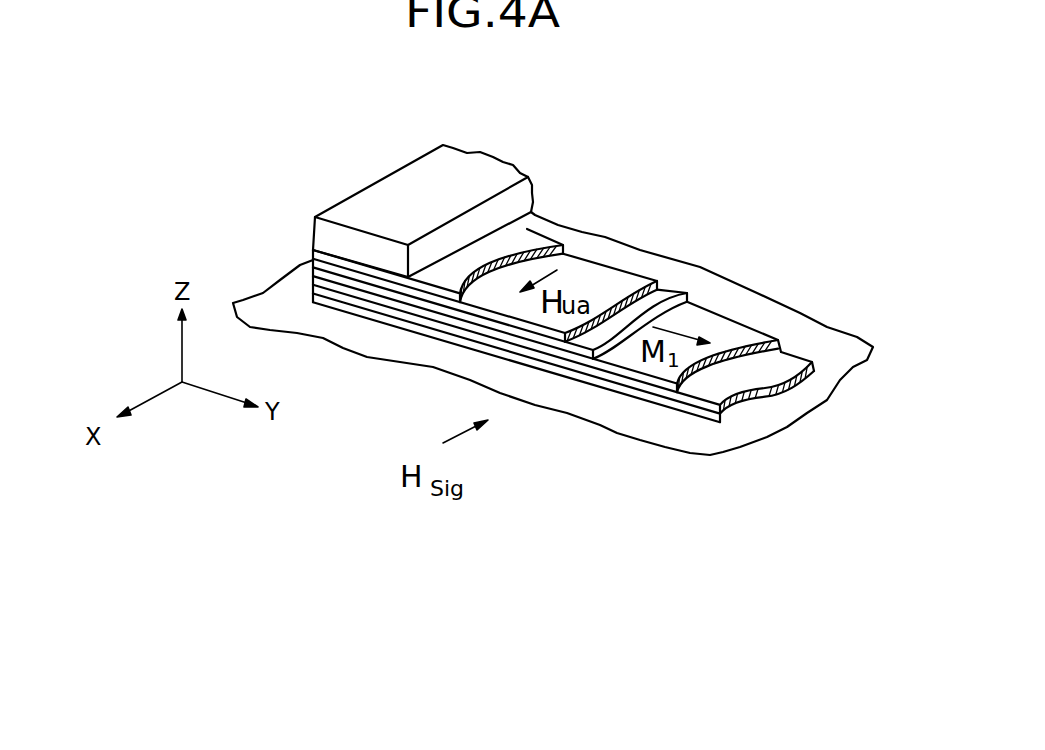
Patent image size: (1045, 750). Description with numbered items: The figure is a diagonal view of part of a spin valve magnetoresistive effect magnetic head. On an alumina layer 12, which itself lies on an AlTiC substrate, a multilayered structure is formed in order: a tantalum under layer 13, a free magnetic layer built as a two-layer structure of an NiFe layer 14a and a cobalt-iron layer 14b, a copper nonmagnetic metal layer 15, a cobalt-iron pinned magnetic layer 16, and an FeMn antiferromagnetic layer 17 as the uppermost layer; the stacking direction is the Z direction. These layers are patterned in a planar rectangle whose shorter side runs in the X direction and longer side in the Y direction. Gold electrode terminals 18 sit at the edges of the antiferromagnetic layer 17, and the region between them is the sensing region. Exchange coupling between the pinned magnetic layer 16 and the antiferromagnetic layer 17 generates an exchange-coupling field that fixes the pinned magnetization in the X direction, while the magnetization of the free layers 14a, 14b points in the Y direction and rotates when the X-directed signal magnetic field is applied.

The alumina layer 12 is at (655, 428).
The under layer 13 is at (813, 363).
The NiFe layer 14a is at (785, 350).
The Co90Fe10 layer 14b is at (730, 330).
The nonmagnetic metal layer 15 is at (647, 310).
The pinned magnetic layer 16 is at (600, 277).
The antiferromagnetic layer 17 is at (523, 243).
The electrode terminal 18 is at (377, 198).